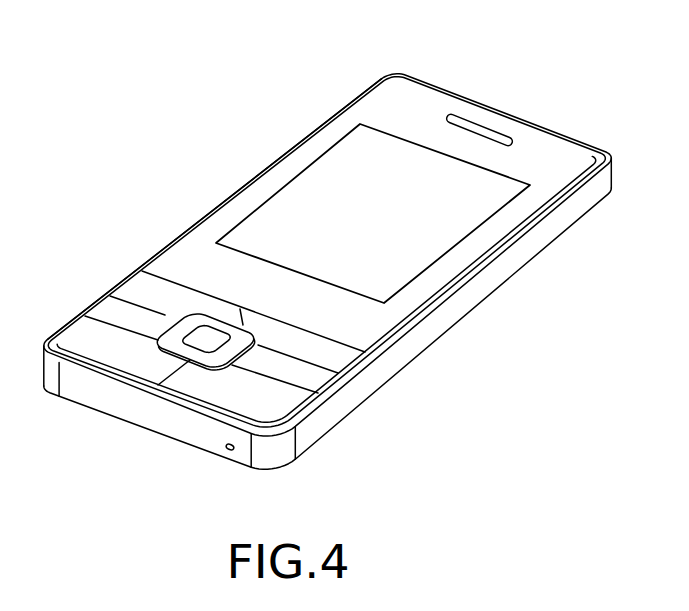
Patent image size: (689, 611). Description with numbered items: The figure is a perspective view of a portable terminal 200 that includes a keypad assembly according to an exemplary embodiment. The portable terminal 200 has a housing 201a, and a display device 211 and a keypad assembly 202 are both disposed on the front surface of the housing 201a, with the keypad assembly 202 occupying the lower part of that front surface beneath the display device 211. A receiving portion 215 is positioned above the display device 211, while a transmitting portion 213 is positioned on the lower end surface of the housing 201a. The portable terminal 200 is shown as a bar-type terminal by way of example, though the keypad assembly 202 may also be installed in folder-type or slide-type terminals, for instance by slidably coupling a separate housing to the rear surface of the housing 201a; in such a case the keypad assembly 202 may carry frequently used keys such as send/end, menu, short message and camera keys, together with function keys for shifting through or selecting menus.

The portable terminal 200 is at (133, 59).
The housing 201a is at (502, 283).
The keypad assembly 202 is at (102, 306).
The display device 211 is at (302, 193).
The transmitting portion 213 is at (229, 447).
The receiving portion 215 is at (473, 127).